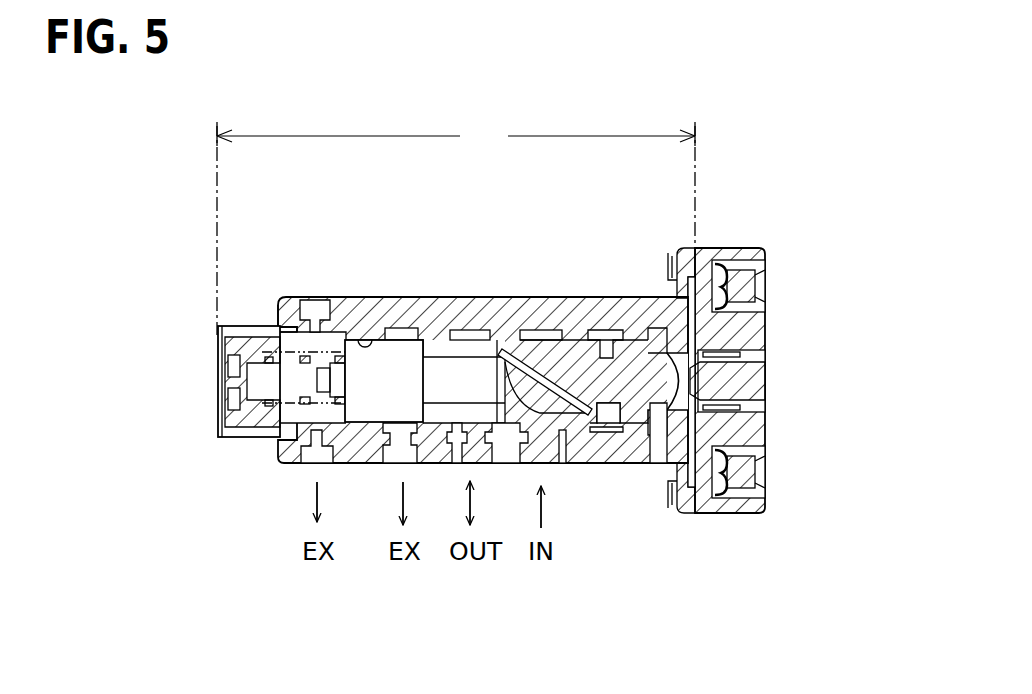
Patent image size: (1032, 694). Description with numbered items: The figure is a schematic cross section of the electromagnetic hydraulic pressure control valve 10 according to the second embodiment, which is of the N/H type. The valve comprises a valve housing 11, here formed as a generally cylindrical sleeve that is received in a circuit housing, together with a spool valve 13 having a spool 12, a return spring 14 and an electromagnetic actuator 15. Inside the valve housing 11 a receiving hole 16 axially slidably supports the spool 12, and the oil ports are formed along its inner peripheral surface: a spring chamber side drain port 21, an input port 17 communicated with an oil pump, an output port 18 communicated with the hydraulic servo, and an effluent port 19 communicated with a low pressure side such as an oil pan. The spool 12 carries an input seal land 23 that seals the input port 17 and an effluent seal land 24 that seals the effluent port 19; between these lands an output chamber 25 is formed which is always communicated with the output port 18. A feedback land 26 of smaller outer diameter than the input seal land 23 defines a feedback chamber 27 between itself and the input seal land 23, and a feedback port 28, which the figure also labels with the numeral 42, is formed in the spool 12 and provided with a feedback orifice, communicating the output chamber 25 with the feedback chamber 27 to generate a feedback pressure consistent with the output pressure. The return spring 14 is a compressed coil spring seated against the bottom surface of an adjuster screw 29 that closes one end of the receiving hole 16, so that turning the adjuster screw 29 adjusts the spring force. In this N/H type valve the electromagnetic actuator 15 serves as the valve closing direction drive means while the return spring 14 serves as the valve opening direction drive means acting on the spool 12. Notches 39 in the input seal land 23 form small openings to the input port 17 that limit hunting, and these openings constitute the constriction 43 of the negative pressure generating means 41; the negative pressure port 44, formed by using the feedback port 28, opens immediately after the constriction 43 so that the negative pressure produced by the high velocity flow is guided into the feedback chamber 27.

The electromagnetic hydraulic pressure control valve 10 is at (710, 106).
The valve housing 11 is at (307, 347).
The spool 12 is at (445, 367).
The spool valve 13 is at (456, 137).
The return spring 14 is at (278, 338).
The electromagnetic actuator 15 is at (742, 236).
The receiving hole 16 is at (367, 345).
The input port 17 is at (530, 467).
The output port 18 is at (462, 467).
The effluent port 19 is at (400, 467).
The spring chamber side drain port 21 is at (307, 468).
The input seal land 23 is at (575, 412).
The effluent seal land 24 is at (397, 343).
The output chamber 25 is at (465, 330).
The feedback land 26 is at (639, 410).
The feedback chamber 27 is at (605, 422).
The feedback port 28 is at (567, 387).
The adjuster screw 29 is at (220, 374).
The notches 39 is at (510, 353).
The negative pressure generating means 41 is at (590, 236).
The valve seat 42 is at (608, 413).
The constriction 43 is at (514, 326).
The negative pressure port 44 is at (520, 346).